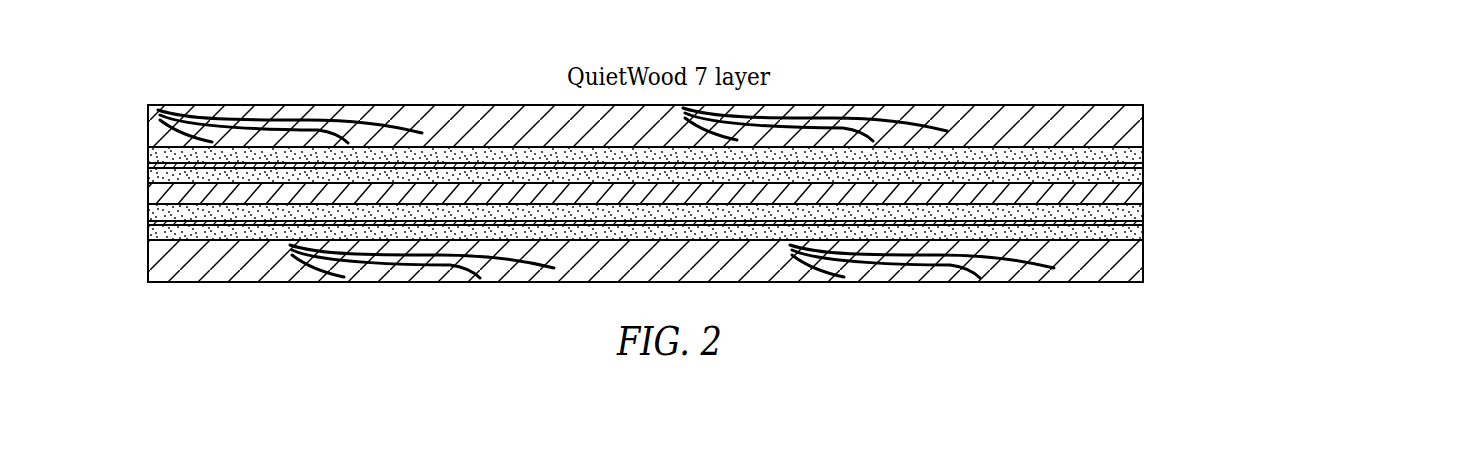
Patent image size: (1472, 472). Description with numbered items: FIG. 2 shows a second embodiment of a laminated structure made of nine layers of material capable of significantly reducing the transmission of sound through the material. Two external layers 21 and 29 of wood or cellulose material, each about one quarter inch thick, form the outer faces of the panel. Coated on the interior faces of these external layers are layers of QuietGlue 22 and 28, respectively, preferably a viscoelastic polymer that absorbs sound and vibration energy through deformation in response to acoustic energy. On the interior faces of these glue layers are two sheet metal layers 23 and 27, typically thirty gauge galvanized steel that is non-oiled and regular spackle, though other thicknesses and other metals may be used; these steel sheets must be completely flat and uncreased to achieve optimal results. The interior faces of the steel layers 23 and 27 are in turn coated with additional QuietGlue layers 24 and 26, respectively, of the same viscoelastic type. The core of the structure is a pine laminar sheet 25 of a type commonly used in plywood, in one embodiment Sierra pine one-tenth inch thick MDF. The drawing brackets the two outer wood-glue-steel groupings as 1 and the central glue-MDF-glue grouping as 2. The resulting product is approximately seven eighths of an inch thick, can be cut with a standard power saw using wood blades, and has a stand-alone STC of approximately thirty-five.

The outer panel (wood / glue / steel laminate) 1 is at (135, 107).
The core panel (glue / MDF / glue) 2 is at (135, 168).
The external layer 21 is at (1139, 125).
The QuietGlue layer 22 is at (1140, 156).
The sheet metal layer 23 is at (1140, 166).
The QuietGlue layer 24 is at (1140, 175).
The pine laminar sheet 25 is at (1128, 193).
The QuietGlue layer 26 is at (1135, 212).
The sheet metal layer 27 is at (1142, 222).
The QuietGlue layer 28 is at (1142, 232).
The external layer 29 is at (1140, 260).